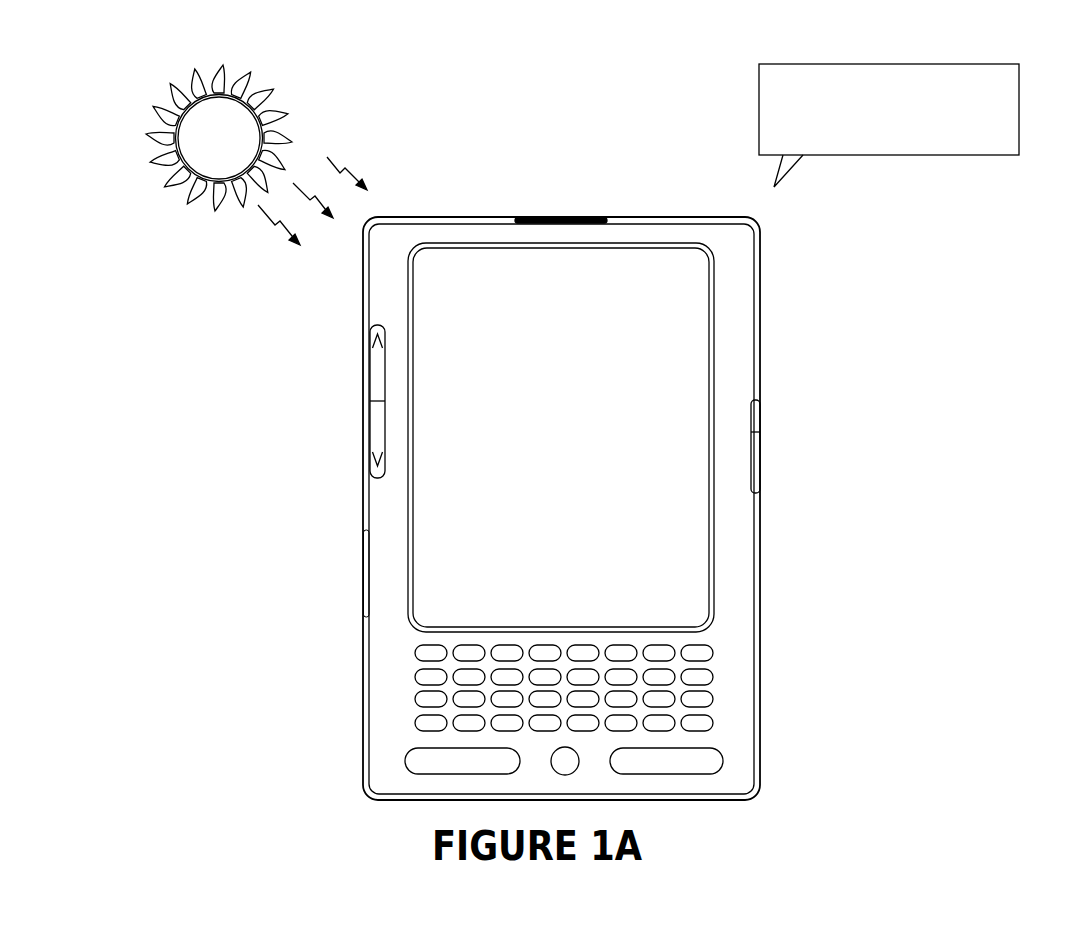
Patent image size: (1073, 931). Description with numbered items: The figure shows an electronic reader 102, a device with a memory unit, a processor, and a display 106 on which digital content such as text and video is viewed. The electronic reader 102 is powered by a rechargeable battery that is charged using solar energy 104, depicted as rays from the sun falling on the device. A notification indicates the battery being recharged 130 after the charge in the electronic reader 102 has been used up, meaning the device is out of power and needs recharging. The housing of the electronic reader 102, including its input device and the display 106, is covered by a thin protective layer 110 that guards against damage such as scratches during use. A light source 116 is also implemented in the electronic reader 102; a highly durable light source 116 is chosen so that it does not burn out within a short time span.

The electronic reader 102 is at (760, 507).
The solar energy 104 is at (270, 238).
The display 106 is at (682, 370).
The protective layer 110 is at (745, 569).
The light source 116 is at (576, 767).
The battery being recharged 130 is at (1019, 110).